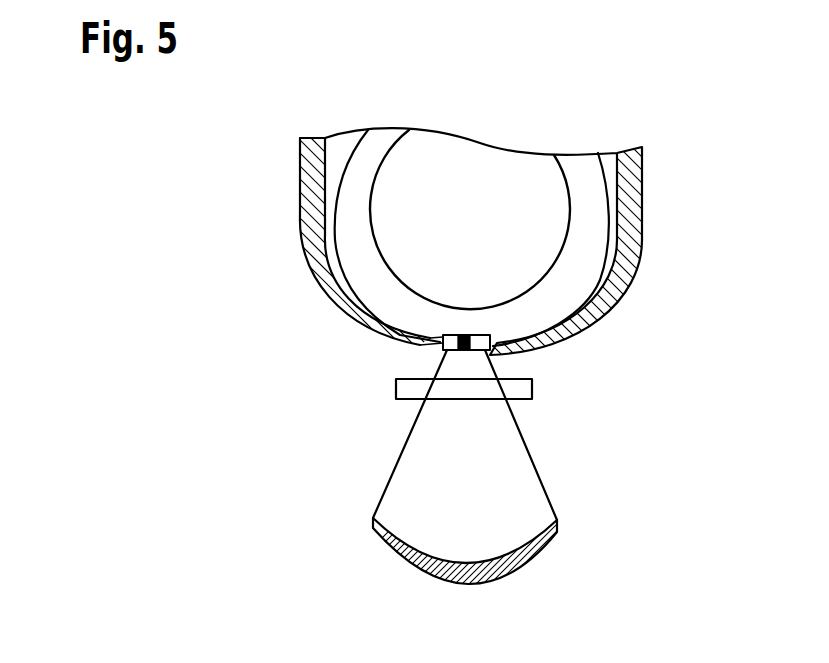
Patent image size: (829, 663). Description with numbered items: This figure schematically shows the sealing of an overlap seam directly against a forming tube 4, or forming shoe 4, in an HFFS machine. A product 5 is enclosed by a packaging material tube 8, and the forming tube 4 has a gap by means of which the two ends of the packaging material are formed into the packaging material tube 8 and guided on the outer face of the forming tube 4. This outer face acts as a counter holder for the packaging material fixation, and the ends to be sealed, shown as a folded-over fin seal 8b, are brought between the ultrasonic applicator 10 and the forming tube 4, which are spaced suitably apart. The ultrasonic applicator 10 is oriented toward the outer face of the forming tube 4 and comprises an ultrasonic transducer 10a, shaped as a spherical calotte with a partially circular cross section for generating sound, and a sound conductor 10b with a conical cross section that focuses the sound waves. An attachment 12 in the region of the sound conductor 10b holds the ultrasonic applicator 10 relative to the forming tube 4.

The forming tube 4 is at (306, 202).
The product 5 is at (566, 238).
The packaging material tube 8 is at (600, 164).
The folded-over fin seal 8b is at (420, 344).
The ultrasonic applicator 10 is at (536, 485).
The ultrasonic transducer 10a is at (390, 555).
The sound conductor 10b is at (415, 498).
The attachment 12 is at (410, 391).